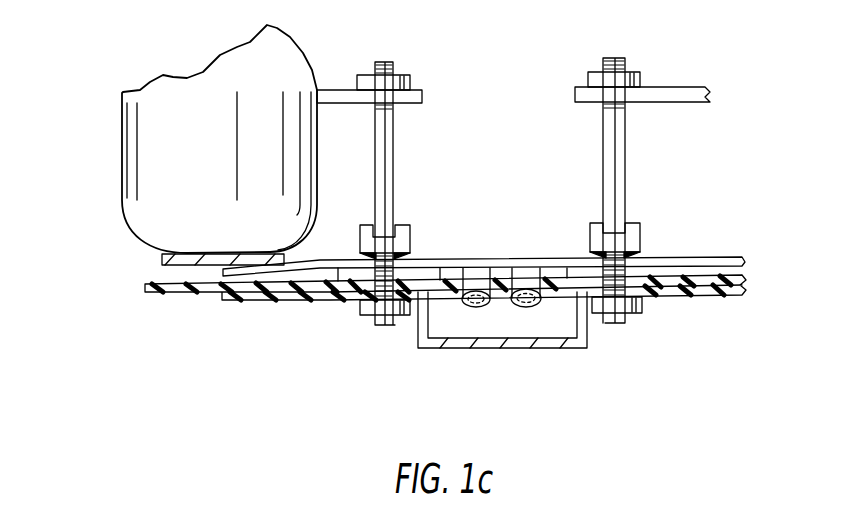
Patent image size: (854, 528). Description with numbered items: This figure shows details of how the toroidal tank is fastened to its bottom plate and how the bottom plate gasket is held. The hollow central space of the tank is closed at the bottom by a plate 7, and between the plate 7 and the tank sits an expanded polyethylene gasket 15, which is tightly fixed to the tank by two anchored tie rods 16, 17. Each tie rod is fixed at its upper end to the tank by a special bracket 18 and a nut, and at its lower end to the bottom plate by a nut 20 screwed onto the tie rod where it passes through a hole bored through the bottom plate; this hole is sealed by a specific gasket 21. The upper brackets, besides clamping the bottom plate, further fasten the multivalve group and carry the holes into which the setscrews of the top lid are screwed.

The plate 7 is at (678, 262).
The expanded polyethylene gasket 15 is at (162, 260).
The bolt 16 is at (390, 138).
The bracket 17 is at (603, 137).
The bracket 18 is at (336, 90).
The nut 20 is at (362, 309).
The gasket 21 is at (410, 226).